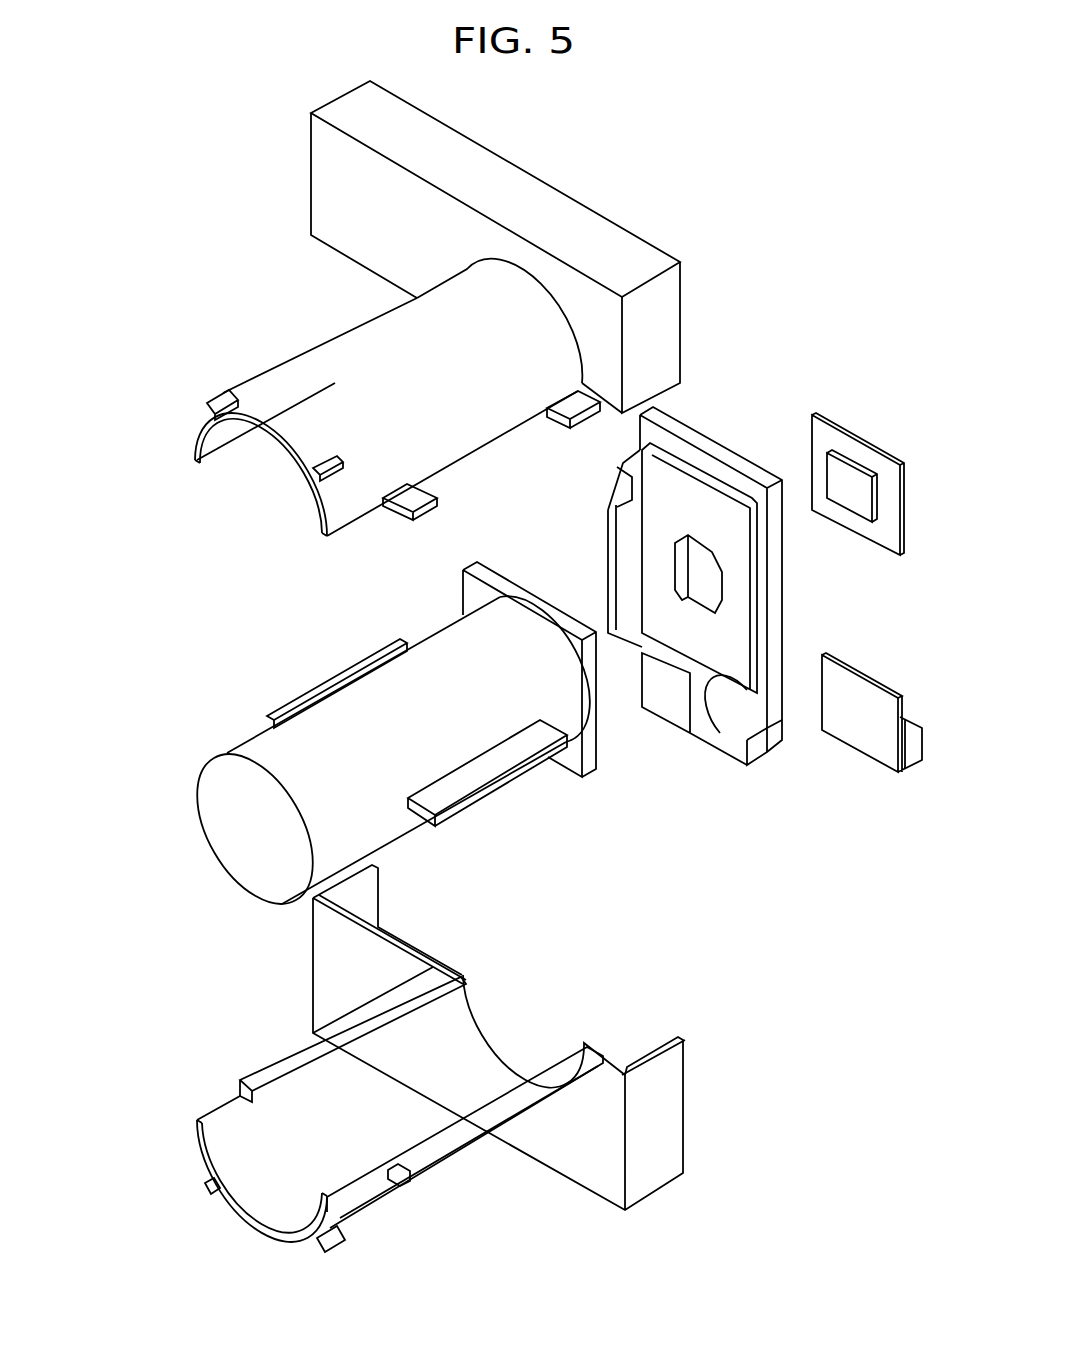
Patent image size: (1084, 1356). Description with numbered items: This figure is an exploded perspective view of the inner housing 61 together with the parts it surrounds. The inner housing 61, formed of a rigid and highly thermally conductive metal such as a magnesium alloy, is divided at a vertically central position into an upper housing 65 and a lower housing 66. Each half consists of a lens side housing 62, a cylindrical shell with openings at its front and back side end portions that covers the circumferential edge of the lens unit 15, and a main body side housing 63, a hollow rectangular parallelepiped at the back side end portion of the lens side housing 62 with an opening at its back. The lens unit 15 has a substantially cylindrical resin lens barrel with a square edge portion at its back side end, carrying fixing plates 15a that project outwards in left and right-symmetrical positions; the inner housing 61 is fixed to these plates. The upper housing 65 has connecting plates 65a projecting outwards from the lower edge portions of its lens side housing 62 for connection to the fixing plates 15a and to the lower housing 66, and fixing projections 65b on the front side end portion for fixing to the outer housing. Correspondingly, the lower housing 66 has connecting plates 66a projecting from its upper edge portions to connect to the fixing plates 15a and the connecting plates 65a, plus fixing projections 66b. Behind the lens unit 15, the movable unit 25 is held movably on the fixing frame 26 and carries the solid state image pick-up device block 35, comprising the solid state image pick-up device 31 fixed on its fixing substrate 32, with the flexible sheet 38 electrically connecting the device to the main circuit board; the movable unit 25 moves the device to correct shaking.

The lens unit 15 is at (366, 751).
The fixing plates 15a is at (493, 768).
The movable unit 25 is at (717, 655).
The fixing frame 26 is at (713, 440).
The solid state image pick-up device 31 is at (842, 488).
The solid state image pick-up device fixing substrate 32 is at (863, 528).
The solid state image pick-up device block 35 is at (850, 449).
The flexible sheet 38 is at (857, 720).
The inner housing 61 is at (340, 727).
The lens side housing 62 is at (332, 385).
The main body side housing 63 is at (563, 213).
The upper housing 65 is at (340, 366).
The connecting plates 65a is at (580, 397).
The fixing projections 65b is at (215, 400).
The lower housing 66 is at (340, 1131).
The connecting plates 66a is at (303, 1055).
The fixing projections 66b is at (205, 1190).